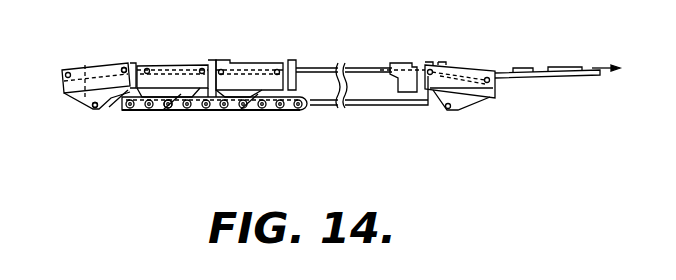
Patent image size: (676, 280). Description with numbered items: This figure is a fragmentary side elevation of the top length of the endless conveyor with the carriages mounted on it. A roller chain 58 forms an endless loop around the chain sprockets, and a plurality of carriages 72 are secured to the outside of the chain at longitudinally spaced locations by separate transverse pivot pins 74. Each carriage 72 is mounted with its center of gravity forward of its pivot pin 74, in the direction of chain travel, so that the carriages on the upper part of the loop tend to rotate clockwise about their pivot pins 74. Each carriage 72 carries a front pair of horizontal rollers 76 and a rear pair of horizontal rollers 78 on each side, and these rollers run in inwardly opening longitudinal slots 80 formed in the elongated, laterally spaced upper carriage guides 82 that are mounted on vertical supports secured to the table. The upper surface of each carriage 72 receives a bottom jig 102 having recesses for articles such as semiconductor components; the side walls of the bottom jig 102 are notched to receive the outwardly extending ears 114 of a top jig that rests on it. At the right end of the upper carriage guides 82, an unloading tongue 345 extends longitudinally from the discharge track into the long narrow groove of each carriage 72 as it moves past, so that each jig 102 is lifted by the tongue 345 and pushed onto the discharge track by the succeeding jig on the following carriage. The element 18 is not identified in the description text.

The carriage block 18 is at (62, 80).
The carriage 72 is at (63, 68).
The front horizontal rollers 76 is at (123, 67).
The transverse pivot pin 74 is at (97, 110).
The roller chain 58 is at (273, 112).
The bottom jig 102 is at (218, 58).
The upper carriage guide 82 is at (319, 67).
The longitudinal slot 80 is at (362, 68).
The rear horizontal rollers 78 is at (427, 66).
The ears 114 is at (442, 67).
The unloading tongue 345 is at (505, 72).